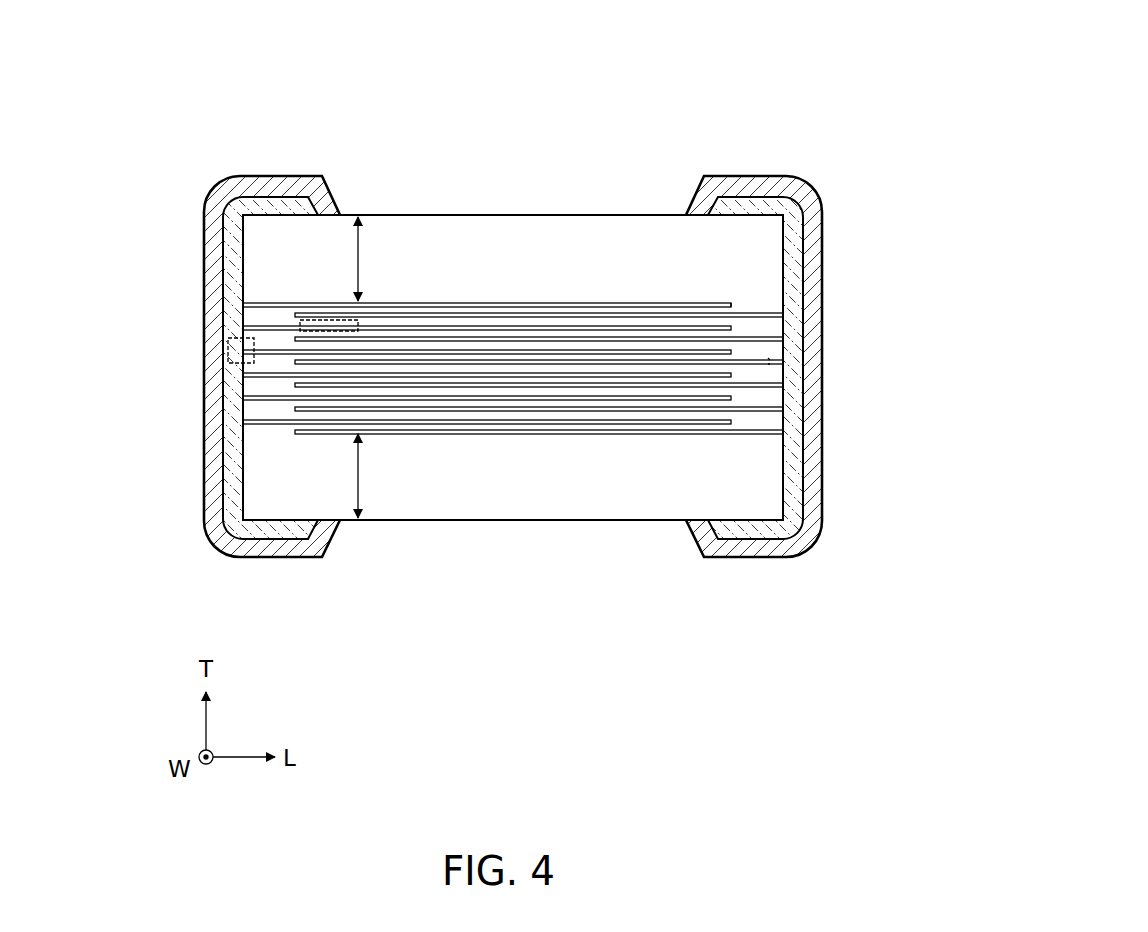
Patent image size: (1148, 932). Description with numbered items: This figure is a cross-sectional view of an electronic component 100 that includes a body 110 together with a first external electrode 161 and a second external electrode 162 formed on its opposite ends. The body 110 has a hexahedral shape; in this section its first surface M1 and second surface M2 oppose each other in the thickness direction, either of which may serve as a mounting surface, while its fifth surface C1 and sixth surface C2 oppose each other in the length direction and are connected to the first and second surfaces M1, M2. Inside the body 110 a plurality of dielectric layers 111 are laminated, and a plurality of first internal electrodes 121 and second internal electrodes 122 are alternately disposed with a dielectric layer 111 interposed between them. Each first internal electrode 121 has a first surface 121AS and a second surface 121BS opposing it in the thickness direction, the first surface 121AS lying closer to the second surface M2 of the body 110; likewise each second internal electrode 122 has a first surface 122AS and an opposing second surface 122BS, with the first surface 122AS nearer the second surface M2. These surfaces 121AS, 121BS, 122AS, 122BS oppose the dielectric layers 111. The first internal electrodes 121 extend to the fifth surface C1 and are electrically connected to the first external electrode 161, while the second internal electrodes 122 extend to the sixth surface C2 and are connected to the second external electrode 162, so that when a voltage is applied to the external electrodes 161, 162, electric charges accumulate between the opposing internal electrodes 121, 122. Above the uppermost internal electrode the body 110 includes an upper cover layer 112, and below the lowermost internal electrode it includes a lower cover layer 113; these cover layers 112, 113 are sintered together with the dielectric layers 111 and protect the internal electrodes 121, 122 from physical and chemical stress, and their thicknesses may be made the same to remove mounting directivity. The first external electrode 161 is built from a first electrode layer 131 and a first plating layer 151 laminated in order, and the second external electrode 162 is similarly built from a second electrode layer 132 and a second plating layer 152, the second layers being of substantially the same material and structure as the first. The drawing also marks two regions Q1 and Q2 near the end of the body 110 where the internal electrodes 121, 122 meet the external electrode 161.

The electronic component 100 is at (795, 46).
The body 110 is at (665, 215).
The dielectric layer 111 is at (573, 312).
The upper cover layer 112 is at (443, 236).
The lower cover layer 113 is at (442, 495).
The first internal electrode 121 is at (512, 303).
The second internal electrode 122 is at (636, 313).
The first surface of first internal electrode 121AS is at (729, 303).
The second surface of first internal electrode 121BS is at (733, 309).
The first surface of second internal electrode 122AS is at (768, 358).
The second surface of second internal electrode 122BS is at (768, 365).
The first electrode layer 131 is at (148, 405).
The second electrode layer 132 is at (880, 405).
The first plating layer 151 is at (213, 405).
The second plating layer 152 is at (813, 405).
The first external electrode 161 is at (354, 366).
The second external electrode 162 is at (726, 366).
The first surface M1 is at (403, 524).
The second surface M2 is at (403, 212).
The fifth surface C1 is at (252, 482).
The sixth surface C2 is at (775, 482).
The first region Q1 is at (300, 326).
The second region Q2 is at (228, 352).